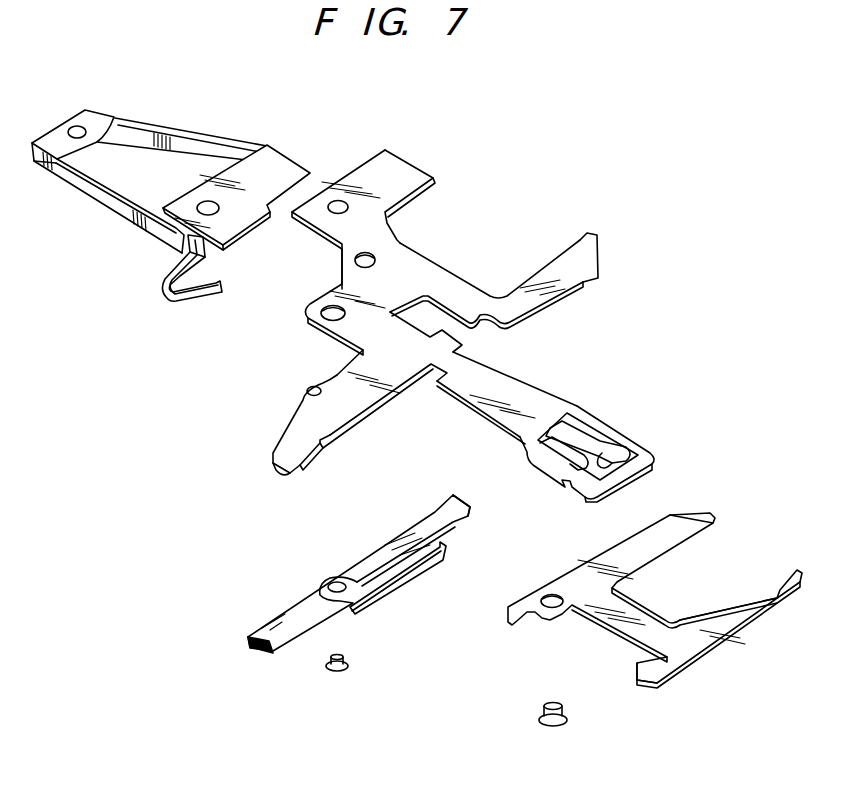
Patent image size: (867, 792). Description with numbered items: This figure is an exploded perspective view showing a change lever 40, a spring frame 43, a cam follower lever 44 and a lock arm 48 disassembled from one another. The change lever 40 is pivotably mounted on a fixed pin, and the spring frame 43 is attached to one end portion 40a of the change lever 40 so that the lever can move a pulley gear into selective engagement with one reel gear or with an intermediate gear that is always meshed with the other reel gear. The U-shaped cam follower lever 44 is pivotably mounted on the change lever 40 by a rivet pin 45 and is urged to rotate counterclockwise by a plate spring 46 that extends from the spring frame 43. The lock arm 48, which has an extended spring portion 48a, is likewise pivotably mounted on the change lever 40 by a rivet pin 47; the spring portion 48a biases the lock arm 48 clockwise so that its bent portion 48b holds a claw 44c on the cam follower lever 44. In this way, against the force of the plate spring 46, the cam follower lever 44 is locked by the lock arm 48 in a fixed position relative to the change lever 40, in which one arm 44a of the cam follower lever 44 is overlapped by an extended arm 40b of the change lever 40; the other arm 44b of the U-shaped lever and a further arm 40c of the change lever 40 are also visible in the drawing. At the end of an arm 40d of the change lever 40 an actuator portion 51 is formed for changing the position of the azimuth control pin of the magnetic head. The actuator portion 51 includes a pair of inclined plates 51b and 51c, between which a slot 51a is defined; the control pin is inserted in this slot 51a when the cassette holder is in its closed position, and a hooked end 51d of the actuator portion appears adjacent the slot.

The change lever 40 is at (431, 312).
The end portion of change lever 40a is at (390, 247).
The extended arm of change lever 40b is at (530, 288).
The lower arm of plate 40c is at (363, 403).
The arm of change lever 40d is at (508, 395).
The spring frame 43 is at (185, 135).
The cam follower lever 44 is at (655, 624).
The arm of cam follower lever 44a is at (738, 617).
The arm of slide plate 44b is at (670, 540).
The claw 44c is at (645, 683).
The rivet pin 45 is at (537, 718).
The plate spring 46 is at (167, 302).
The rivet pin 47 is at (350, 665).
The lock arm 48 is at (384, 574).
The extended spring portion 48a is at (422, 577).
The bent portion 48b is at (465, 517).
The actuator portion 51 is at (598, 447).
The slot 51a is at (653, 460).
The inclined plate 51b is at (587, 430).
The inclined plate 51c is at (550, 455).
The hooked end of tongue 51d is at (610, 477).